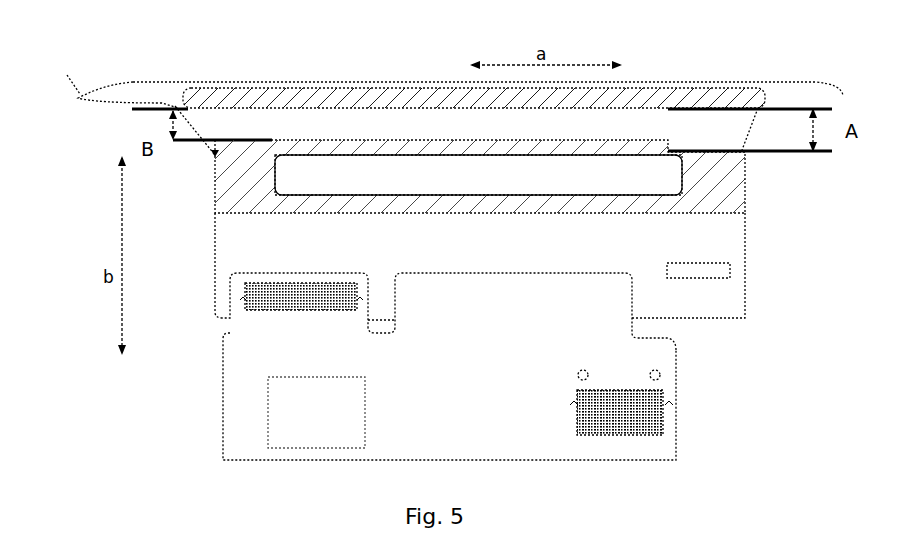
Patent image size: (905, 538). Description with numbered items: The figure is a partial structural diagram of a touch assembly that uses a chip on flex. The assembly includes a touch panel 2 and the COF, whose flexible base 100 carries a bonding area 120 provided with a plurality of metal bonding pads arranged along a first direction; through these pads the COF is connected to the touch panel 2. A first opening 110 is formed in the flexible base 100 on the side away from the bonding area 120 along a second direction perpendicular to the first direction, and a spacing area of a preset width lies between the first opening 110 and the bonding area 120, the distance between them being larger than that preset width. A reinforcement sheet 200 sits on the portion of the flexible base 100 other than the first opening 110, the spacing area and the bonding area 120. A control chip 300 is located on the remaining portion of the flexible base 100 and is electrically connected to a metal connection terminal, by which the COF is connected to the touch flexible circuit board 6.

The touch panel 2 is at (77, 97).
The touch flexible circuit board 6 is at (618, 352).
The flexible base 100 is at (742, 163).
The first opening 110 is at (273, 181).
The bonding area 120 is at (666, 94).
The reinforcement sheet 200 is at (708, 190).
The control chip 300 is at (713, 278).